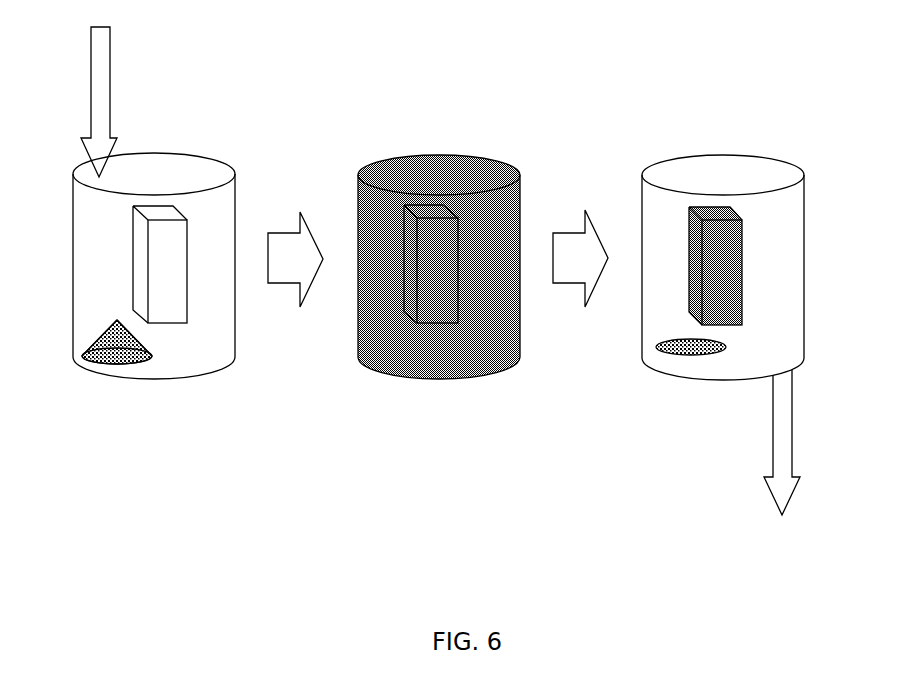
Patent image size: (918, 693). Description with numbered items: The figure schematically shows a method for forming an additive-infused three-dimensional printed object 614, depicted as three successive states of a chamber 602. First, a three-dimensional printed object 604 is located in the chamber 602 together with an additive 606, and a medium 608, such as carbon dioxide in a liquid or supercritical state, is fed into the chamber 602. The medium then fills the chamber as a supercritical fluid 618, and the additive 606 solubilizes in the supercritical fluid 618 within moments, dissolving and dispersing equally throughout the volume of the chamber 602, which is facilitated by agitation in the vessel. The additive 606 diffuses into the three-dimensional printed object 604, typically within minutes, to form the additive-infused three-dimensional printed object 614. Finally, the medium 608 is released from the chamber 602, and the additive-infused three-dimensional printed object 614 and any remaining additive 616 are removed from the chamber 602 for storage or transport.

The chamber 602 is at (196, 170).
The three-dimensional printed object 604 is at (140, 252).
The additive 606 is at (115, 327).
The medium 608 is at (110, 66).
The additive-infused three-dimensional printed object 614 is at (722, 205).
The remaining additive 616 is at (690, 355).
The supercritical fluid 618 is at (396, 347).